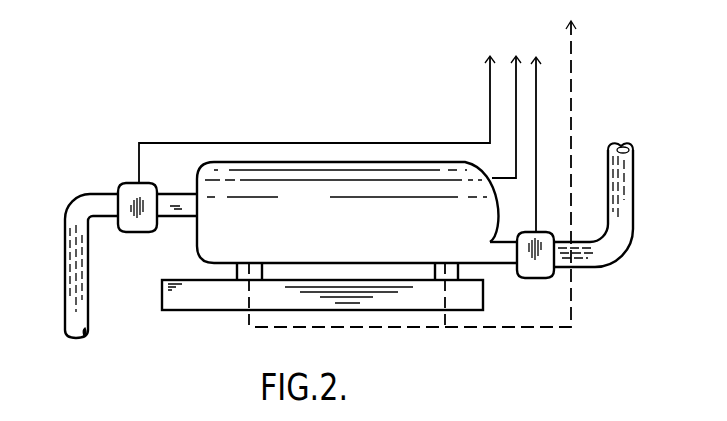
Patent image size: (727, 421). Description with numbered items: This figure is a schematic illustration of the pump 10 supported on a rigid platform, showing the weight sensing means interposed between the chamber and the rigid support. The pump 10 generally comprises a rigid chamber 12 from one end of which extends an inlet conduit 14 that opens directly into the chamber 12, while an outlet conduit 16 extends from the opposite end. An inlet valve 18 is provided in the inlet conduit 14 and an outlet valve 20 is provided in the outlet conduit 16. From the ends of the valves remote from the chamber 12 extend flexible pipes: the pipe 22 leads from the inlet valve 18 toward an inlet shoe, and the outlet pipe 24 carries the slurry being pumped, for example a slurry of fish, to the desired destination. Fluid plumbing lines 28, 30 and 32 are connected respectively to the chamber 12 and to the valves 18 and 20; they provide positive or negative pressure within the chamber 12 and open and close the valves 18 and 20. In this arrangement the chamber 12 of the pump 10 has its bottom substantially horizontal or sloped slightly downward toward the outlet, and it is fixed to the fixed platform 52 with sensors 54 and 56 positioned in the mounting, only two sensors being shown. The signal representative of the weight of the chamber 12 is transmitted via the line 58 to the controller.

The pump 10 is at (190, 245).
The rigid chamber 12 is at (328, 208).
The inlet conduit 14 is at (177, 203).
The outlet conduit 16 is at (503, 257).
The inlet valve 18 is at (128, 201).
The outlet valve 20 is at (540, 270).
The flexible pipe 22 is at (73, 330).
The outlet pipe 24 is at (624, 233).
The fluid plumbing line 28 is at (516, 77).
The fluid plumbing line 30 is at (490, 110).
The fluid plumbing line 32 is at (537, 117).
The fixed platform 52 is at (205, 296).
The sensor 54 is at (250, 263).
The sensor 56 is at (445, 263).
The line 58 is at (572, 72).